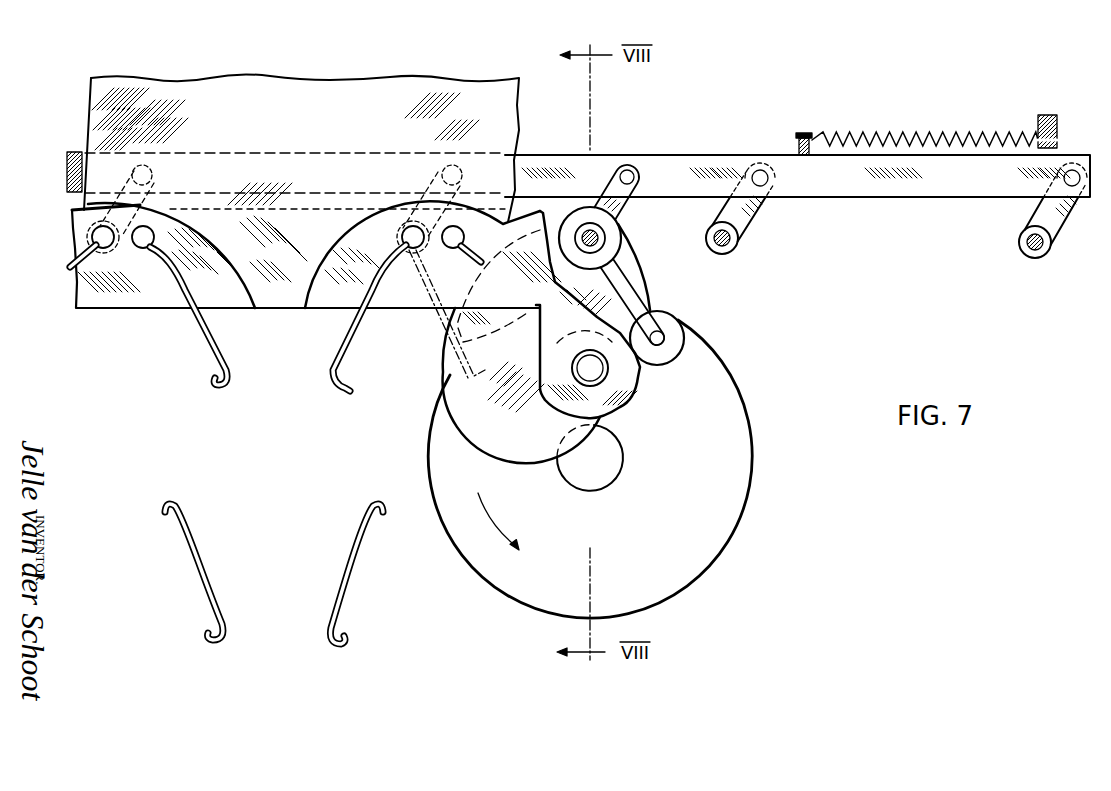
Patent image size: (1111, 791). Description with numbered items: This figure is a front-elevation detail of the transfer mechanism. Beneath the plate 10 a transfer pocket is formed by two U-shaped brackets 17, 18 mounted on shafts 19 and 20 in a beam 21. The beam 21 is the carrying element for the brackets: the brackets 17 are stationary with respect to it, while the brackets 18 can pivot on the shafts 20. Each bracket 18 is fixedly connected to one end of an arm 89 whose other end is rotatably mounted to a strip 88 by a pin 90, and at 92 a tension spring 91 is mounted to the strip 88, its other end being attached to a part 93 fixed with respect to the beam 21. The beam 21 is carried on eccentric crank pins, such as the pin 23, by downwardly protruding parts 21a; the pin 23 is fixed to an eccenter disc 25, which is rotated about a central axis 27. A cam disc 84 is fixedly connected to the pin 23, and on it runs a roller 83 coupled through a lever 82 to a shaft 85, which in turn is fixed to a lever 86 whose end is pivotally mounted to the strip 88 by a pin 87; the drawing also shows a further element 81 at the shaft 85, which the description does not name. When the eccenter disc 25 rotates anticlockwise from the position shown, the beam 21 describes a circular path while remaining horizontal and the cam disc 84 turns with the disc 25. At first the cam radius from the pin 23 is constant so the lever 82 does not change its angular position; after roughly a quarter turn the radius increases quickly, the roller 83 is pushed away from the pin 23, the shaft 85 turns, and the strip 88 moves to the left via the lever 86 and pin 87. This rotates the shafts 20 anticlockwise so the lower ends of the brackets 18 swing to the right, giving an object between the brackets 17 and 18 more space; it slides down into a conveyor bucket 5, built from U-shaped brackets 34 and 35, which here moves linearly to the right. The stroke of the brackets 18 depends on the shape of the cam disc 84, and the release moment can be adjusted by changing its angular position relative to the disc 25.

The conveyor bucket 5 is at (268, 634).
The plate 10 is at (282, 308).
The U-shaped bracket 17 is at (218, 395).
The U-shaped bracket 18 is at (68, 266).
The shaft 19 is at (142, 250).
The shaft 20 is at (422, 248).
The beam 21 is at (118, 308).
The downwardly protruding part 21a is at (623, 413).
The crank pin 23 is at (598, 376).
The eccenter disc 25 is at (753, 497).
The central axis 27 is at (612, 480).
The U-shaped bracket 34 is at (196, 547).
The U-shaped bracket 35 is at (350, 547).
The roller 81 is at (621, 231).
The lever 82 is at (648, 303).
The roller 83 is at (685, 322).
The cam disc 84 is at (446, 364).
The shaft 85 is at (597, 244).
The lever 86 is at (603, 165).
The pin 87 is at (630, 170).
The strip 88 is at (675, 155).
The arm 89 is at (153, 176).
The pin 90 is at (760, 170).
The tension spring 91 is at (925, 132).
The spring mounting point 92 is at (805, 133).
The part 93 is at (1038, 118).